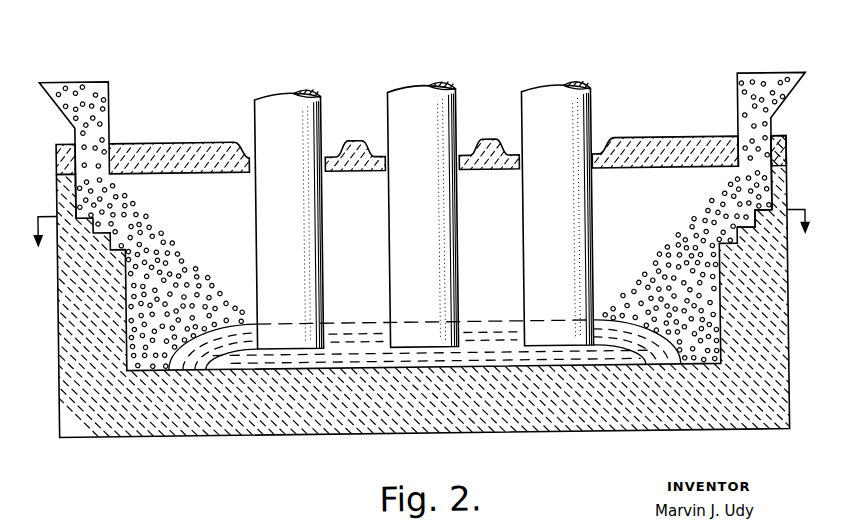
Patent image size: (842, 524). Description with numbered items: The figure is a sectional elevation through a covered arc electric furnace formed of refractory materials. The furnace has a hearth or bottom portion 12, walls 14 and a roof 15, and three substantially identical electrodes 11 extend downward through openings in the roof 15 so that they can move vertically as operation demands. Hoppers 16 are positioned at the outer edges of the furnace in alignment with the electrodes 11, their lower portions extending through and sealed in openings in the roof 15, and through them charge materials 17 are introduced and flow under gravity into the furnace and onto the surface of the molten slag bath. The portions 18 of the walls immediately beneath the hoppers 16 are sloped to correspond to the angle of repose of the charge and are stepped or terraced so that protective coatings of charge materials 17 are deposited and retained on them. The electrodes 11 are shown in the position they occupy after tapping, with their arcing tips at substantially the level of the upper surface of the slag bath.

The electrodes 11 is at (324, 109).
The hearth or bottom portion 12 is at (330, 368).
The walls 14 is at (59, 314).
The roof 15 is at (670, 141).
The hoppers 16 is at (83, 77).
The charge materials 17 is at (171, 240).
The portions of the side and end walls 18 is at (757, 226).